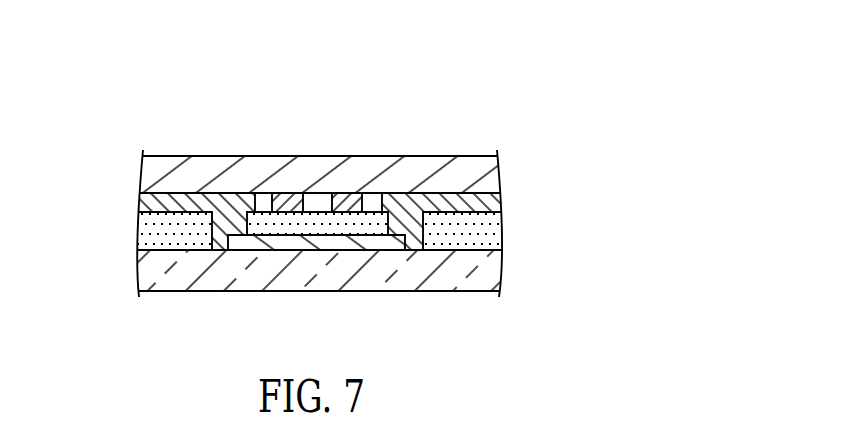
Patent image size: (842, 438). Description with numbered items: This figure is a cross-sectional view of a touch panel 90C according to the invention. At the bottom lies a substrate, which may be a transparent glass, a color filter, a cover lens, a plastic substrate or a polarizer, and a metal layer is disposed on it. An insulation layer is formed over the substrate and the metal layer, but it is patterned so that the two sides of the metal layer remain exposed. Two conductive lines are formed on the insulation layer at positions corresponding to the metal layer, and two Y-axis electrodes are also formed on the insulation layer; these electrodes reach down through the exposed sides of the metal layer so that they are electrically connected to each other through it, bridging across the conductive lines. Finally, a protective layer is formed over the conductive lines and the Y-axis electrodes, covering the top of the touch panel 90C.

The touch panel 90C is at (348, 39).